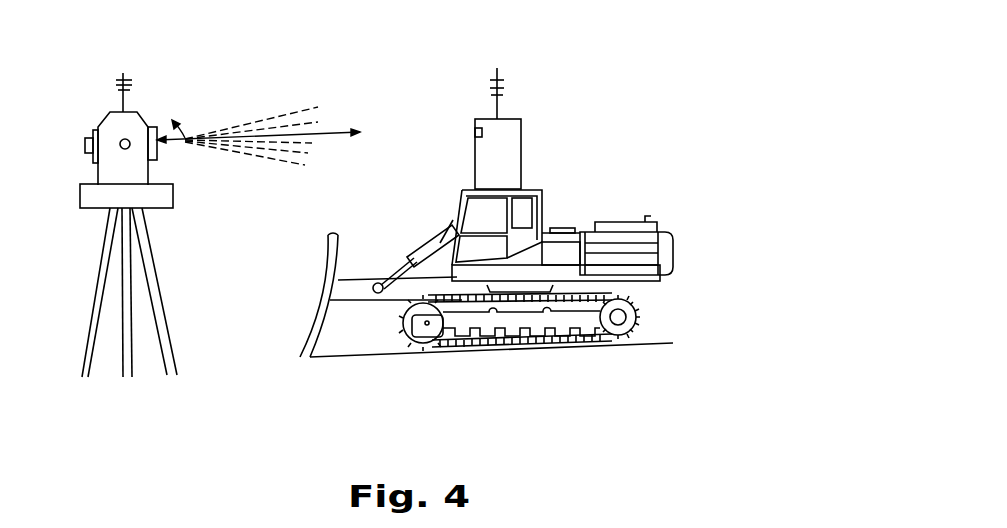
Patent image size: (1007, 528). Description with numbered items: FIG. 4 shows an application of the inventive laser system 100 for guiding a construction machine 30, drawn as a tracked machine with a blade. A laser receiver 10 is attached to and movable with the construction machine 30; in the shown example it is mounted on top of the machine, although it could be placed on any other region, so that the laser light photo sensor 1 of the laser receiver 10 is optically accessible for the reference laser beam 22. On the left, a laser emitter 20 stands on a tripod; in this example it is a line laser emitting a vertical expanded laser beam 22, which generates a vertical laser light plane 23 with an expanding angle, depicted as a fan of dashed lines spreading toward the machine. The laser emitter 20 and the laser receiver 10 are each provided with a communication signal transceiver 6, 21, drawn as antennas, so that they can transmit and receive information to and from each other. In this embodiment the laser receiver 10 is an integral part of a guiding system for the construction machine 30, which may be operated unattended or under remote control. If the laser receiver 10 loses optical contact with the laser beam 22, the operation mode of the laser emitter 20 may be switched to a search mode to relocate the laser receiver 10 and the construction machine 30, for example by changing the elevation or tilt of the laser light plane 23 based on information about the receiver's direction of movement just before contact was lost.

The laser light photo sensor 1 is at (475, 130).
The communication signal transceiver 6 is at (497, 103).
The laser receiver 10 is at (535, 167).
The laser emitter 20 is at (129, 104).
The communication signal transceiver 21 is at (125, 107).
The reference laser beam 22 is at (236, 141).
The laser light plane 23 is at (256, 158).
The construction machine 30 is at (603, 194).
The laser system 100 is at (335, 197).